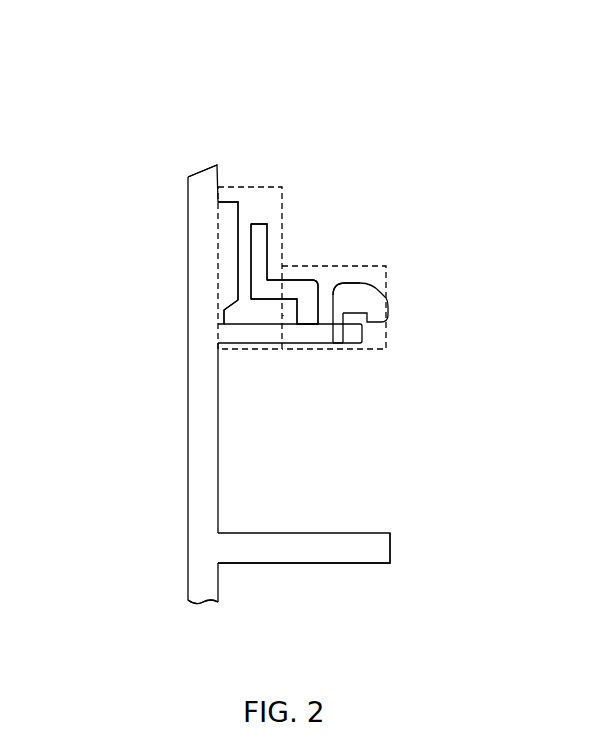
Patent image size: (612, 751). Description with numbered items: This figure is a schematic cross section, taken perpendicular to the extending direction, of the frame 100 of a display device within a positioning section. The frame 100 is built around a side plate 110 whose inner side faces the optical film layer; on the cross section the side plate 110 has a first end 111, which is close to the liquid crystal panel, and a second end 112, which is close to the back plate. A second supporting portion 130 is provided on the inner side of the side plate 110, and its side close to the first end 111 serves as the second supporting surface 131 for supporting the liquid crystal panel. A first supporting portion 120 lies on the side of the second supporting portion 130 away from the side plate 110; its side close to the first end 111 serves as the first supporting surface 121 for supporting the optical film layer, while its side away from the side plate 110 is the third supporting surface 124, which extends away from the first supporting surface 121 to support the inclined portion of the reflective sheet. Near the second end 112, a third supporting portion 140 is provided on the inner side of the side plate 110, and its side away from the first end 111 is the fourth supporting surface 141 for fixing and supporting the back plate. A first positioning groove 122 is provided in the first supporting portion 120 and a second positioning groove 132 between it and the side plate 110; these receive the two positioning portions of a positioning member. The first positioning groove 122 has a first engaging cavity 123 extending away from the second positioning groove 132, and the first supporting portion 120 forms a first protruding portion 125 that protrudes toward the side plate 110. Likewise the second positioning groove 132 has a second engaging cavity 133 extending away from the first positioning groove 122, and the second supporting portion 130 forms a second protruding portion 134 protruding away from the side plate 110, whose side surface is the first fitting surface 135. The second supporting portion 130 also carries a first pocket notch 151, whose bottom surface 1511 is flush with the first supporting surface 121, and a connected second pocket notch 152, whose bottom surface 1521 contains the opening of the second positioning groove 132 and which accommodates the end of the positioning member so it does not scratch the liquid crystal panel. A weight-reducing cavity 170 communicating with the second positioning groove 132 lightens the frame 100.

The frame 100 is at (118, 377).
The side plate 110 is at (212, 452).
The first end 111 is at (203, 175).
The second end 112 is at (197, 584).
The first supporting portion 120 is at (312, 292).
The first supporting surface 121 is at (326, 305).
The first positioning groove 122 is at (334, 280).
The first engaging cavity 123 is at (336, 338).
The third supporting surface 124 is at (362, 292).
The first protruding portion 125 is at (356, 298).
The second supporting portion 130 is at (240, 240).
The second supporting surface 131 is at (222, 191).
The second positioning groove 132 is at (238, 240).
The second engaging cavity 133 is at (233, 324).
The second protruding portion 134 is at (228, 251).
The first fitting surface 135 is at (238, 292).
The third supporting portion 140 is at (261, 542).
The fourth supporting surface 141 is at (337, 563).
The first pocket notch 151 is at (359, 211).
The bottom surface of the first pocket notch 1511 is at (302, 279).
The second pocket notch 152 is at (357, 184).
The bottom surface of the second pocket notch 1521 is at (260, 223).
The weight-reducing cavity 170 is at (283, 315).